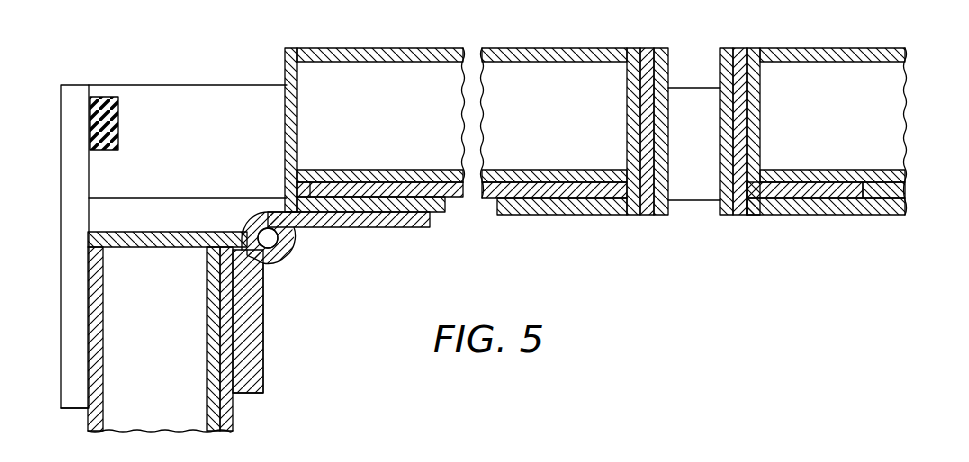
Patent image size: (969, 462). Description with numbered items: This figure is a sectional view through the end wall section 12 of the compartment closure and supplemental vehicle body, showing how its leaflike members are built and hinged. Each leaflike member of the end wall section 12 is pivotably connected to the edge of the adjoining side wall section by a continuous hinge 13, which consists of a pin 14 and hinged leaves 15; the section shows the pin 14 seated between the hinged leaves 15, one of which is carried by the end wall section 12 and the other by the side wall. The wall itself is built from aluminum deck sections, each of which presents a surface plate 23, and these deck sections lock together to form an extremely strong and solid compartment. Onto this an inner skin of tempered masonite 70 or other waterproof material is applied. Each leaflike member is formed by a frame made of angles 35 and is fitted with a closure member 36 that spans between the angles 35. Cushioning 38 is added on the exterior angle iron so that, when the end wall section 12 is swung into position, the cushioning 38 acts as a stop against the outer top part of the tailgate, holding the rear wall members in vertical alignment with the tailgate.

The end wall section 12 is at (390, 124).
The continuous hinge 13 is at (300, 285).
The pin 14 is at (270, 240).
The hinged leaves 15 is at (338, 228).
The surface plate 23 is at (590, 56).
The angles 35 is at (286, 86).
The closure member 36 is at (688, 200).
The cushioning 38 is at (122, 86).
The tempered masonite 70 is at (487, 205).